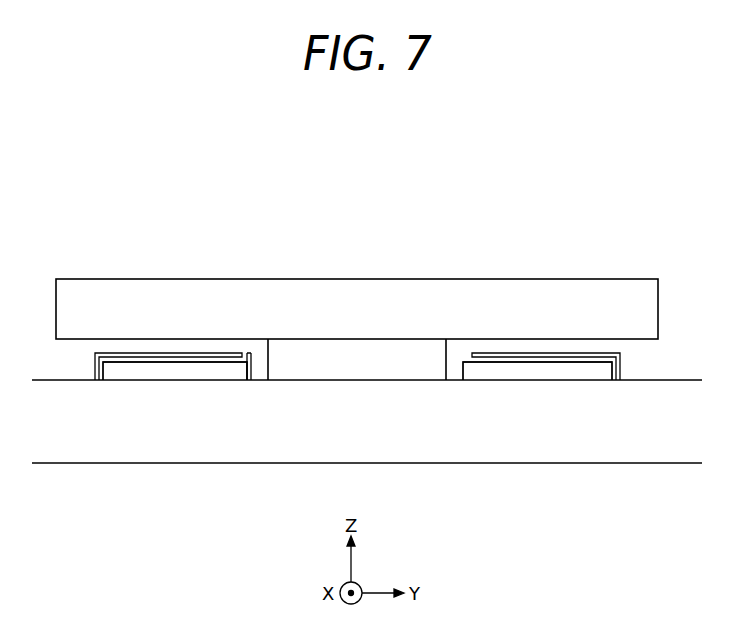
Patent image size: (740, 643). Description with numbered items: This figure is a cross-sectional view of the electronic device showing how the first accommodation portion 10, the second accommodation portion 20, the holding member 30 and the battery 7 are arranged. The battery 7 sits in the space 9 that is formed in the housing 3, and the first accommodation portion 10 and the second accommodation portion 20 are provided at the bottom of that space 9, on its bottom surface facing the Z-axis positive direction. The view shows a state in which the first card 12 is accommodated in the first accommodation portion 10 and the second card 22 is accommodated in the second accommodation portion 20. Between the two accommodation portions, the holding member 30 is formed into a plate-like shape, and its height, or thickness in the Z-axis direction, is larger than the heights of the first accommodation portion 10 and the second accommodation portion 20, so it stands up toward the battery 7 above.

The battery 7 is at (424, 289).
The holding member 30 is at (343, 358).
The space 9 is at (681, 379).
The housing 3 is at (473, 445).
The first accommodation portion 10 is at (95, 362).
The first card 12 is at (177, 372).
The second accommodation portion 20 is at (620, 360).
The second card 22 is at (540, 372).